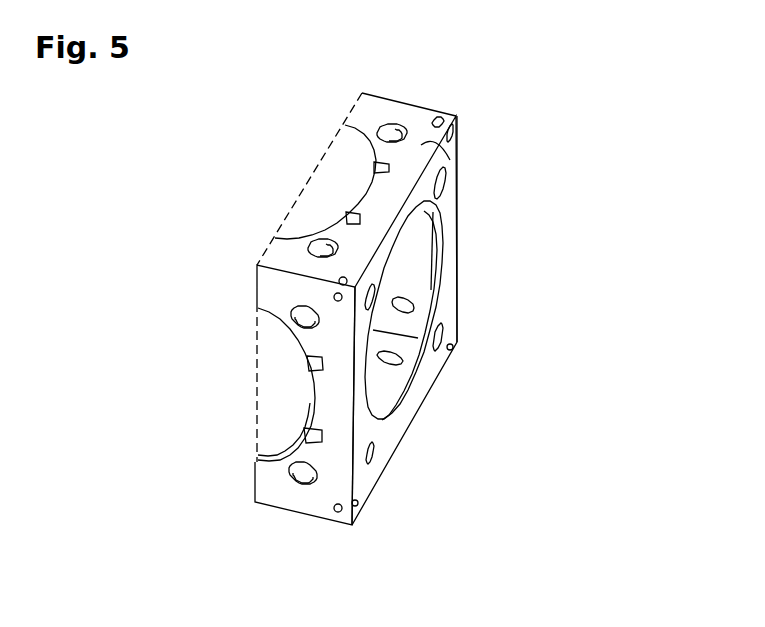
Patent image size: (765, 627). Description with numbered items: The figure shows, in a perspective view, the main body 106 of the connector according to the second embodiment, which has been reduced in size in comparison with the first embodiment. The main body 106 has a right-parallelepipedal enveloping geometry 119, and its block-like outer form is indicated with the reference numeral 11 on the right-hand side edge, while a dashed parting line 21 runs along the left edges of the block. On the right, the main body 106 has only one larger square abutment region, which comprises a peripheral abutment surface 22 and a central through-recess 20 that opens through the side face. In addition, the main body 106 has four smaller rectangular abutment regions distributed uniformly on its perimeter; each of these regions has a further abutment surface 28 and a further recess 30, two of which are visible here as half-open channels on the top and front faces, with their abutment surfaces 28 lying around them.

The housing 11 is at (457, 329).
The central through-recess 20 is at (410, 278).
The parting plane 21 is at (250, 356).
The peripheral abutment surface 22 is at (445, 203).
The further abutment surface 28 is at (423, 142).
The further recess 30 is at (342, 175).
The main body 106 is at (235, 378).
The right-parallelepipedal enveloping geometry 119 is at (299, 201).